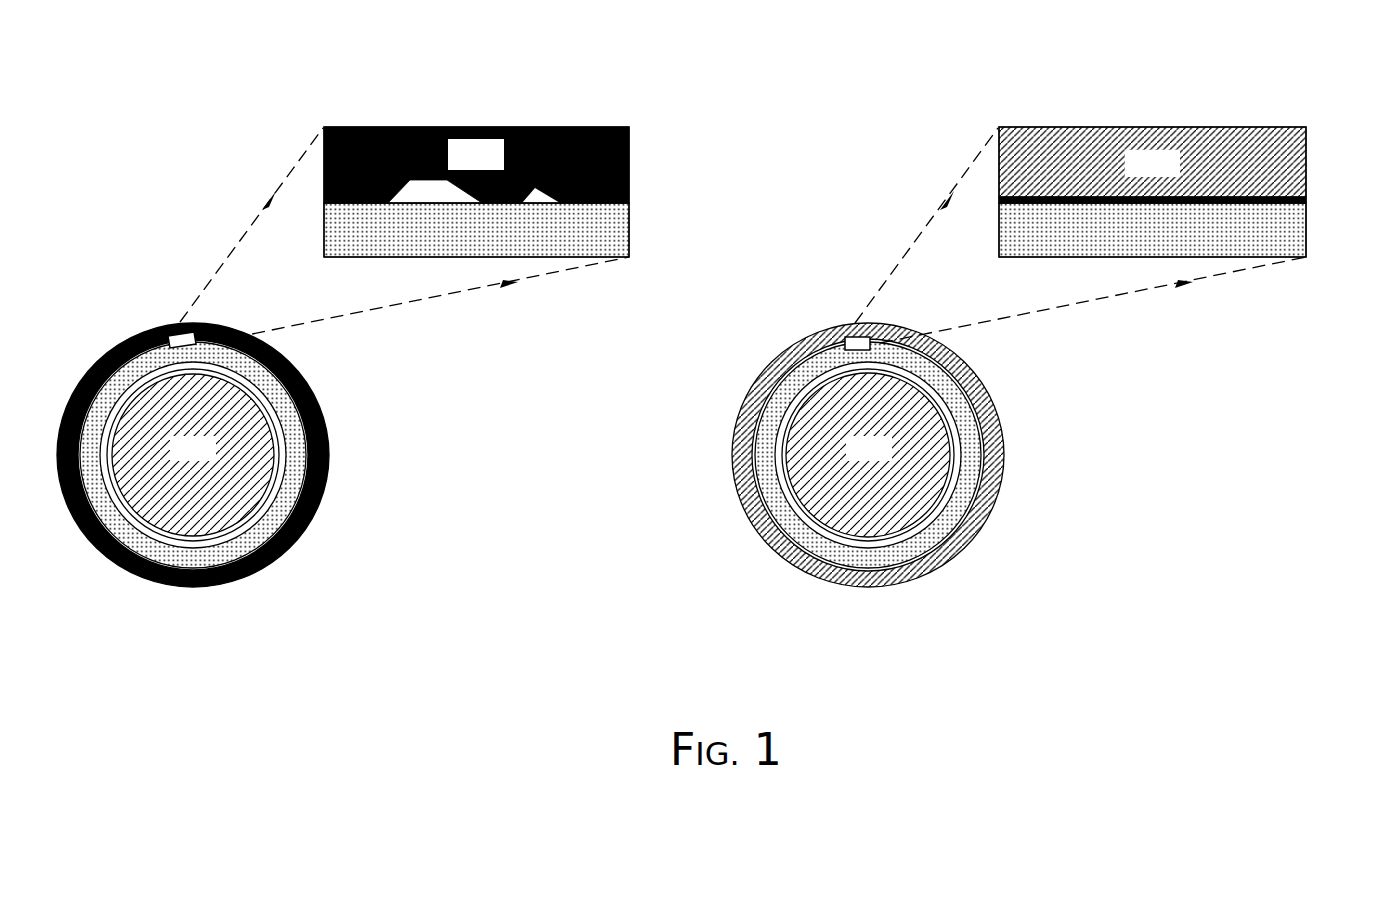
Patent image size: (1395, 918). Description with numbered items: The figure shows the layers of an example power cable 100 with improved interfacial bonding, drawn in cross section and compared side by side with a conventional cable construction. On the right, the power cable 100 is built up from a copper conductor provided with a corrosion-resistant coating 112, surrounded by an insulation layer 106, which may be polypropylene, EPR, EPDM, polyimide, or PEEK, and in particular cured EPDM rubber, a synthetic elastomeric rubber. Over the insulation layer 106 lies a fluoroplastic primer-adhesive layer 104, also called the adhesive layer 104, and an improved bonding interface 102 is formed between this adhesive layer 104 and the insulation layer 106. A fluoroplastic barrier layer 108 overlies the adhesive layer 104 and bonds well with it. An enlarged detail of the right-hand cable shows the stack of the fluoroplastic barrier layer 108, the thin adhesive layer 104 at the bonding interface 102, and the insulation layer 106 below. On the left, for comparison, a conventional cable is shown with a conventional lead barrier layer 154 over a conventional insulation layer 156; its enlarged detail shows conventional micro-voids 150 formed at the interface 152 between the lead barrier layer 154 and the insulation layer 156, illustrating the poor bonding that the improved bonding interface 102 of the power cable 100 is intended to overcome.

The power cable 100 is at (781, 137).
The bonding interface 102 is at (1027, 214).
The fluoroplastic primer-adhesive layer 104 is at (1279, 192).
The insulation layer 106 is at (1152, 230).
The fluoroplastic barrier layer 108 is at (1152, 162).
The corrosion-resistant coating 112 is at (966, 467).
The micro-voids 150 is at (424, 188).
The interface 152 is at (352, 212).
The lead barrier layer 154 is at (476, 165).
The insulation layer 156 is at (476, 230).